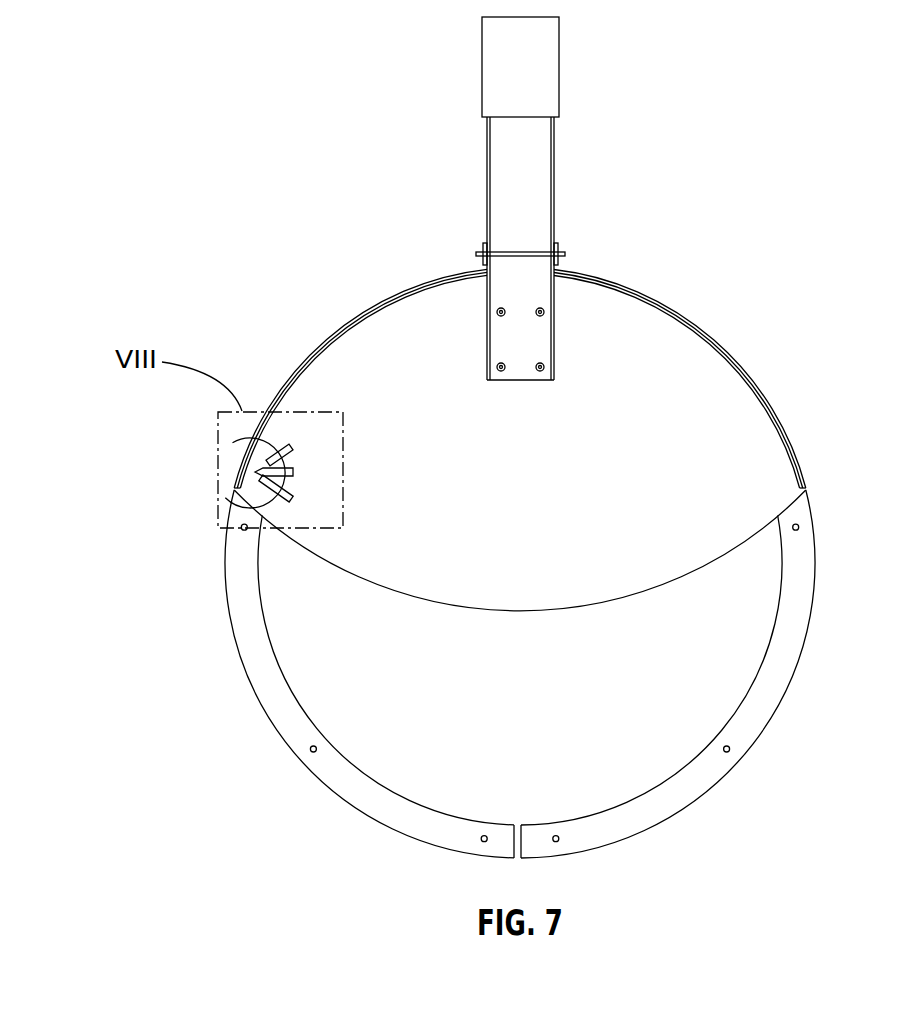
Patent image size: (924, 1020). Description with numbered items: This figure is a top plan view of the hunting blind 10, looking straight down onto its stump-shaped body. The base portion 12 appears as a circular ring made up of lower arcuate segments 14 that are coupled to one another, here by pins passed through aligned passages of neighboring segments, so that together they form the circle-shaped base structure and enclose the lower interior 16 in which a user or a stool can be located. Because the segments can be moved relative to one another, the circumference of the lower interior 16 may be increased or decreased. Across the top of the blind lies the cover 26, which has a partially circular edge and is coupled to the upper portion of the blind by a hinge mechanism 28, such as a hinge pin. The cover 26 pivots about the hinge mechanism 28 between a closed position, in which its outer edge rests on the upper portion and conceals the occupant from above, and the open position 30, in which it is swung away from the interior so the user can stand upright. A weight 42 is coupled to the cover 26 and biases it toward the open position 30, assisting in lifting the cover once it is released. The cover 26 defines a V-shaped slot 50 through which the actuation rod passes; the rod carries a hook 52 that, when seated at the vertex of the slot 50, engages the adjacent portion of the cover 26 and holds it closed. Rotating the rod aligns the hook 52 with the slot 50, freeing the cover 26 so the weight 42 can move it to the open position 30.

The hunting blind 10 is at (792, 186).
The base portion 12 is at (260, 660).
The lower arcuate segments 14 is at (273, 685).
The lower interior 16 is at (538, 702).
The cover 26 is at (718, 445).
The hinge mechanism 28 is at (562, 248).
The open position 30 is at (754, 342).
The weight 42 is at (538, 78).
The slot 50 is at (225, 498).
The hook 52 is at (232, 443).